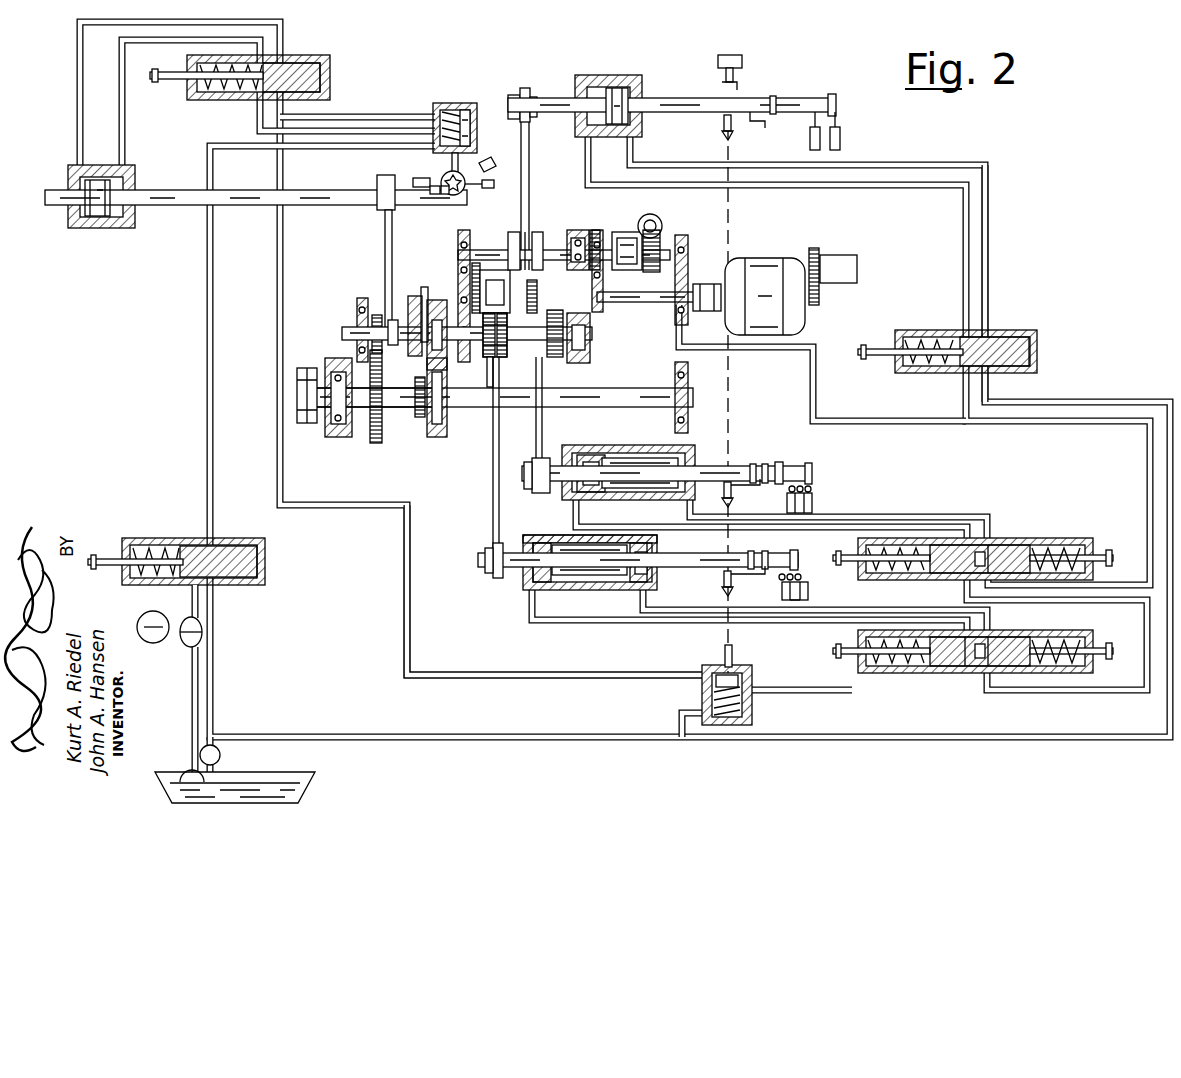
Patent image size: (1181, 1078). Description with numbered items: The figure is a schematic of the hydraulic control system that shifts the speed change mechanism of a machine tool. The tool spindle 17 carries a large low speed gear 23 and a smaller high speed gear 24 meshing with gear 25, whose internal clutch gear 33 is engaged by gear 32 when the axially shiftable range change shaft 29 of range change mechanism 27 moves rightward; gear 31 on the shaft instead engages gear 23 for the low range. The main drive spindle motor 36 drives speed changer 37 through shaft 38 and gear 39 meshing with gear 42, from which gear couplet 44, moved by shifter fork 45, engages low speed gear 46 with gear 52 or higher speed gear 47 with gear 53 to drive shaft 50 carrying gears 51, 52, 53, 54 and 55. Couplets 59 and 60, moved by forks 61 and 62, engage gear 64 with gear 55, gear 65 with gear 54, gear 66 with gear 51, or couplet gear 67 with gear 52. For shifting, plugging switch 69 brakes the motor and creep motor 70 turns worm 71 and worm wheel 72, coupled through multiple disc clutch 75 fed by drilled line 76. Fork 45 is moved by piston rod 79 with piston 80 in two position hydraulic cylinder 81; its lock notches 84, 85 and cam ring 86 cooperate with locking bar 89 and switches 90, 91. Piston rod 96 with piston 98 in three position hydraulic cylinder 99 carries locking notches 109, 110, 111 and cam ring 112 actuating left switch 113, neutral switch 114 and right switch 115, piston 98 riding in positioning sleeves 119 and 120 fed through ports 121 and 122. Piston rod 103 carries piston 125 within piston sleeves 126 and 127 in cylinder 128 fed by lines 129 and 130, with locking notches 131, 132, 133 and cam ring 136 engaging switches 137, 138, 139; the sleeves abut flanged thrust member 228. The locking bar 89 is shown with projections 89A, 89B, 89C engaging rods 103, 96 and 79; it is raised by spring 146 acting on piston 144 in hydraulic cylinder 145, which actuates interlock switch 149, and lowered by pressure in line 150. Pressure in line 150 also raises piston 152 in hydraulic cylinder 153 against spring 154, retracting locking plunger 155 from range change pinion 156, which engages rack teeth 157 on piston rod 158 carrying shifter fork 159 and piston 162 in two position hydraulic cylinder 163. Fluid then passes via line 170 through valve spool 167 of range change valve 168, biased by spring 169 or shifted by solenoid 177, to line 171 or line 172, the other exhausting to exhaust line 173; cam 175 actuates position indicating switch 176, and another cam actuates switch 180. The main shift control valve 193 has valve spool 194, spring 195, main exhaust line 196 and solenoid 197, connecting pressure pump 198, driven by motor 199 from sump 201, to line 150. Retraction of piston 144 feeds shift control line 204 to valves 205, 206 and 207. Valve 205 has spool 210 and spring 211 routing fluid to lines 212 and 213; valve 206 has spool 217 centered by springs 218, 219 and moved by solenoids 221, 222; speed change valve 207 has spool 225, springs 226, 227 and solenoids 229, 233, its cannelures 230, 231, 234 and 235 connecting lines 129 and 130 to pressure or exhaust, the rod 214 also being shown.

The tool spindle 17 is at (300, 424).
The low speed gear 23 is at (372, 445).
The high speed gear 24 is at (386, 420).
The high speed spindle driving gear 25 is at (428, 290).
The range change mechanism 27 is at (372, 278).
The range change shaft 29 is at (343, 335).
The gear 31 is at (372, 291).
The gear 32 is at (395, 318).
The internal clutch gear 33 is at (416, 350).
The main drive spindle motor 36 is at (780, 303).
The speed changer 37 is at (495, 186).
The shaft 38 is at (641, 303).
The gear 39 is at (598, 312).
The gear 42 is at (590, 233).
The gear couplet 44 is at (551, 222).
The shifter fork 45 is at (531, 151).
The low speed gear 46 is at (513, 232).
The higher speed gear 47 is at (538, 235).
The shaft 50 is at (458, 254).
The gear 51 is at (472, 258).
The gear 52 is at (478, 290).
The gear 53 is at (495, 291).
The gear 54 is at (500, 340).
The gear 55 is at (540, 288).
The low speed gear couplet 59 is at (576, 406).
The high speed gear couplet 60 is at (481, 403).
The shifter fork 61 is at (537, 452).
The shifter fork 62 is at (492, 468).
The gear 64 is at (578, 363).
The gear 65 is at (554, 358).
The gear 66 is at (482, 348).
The couplet gear 67 is at (501, 358).
The plugging switch 69 is at (858, 266).
The creep motor 70 is at (628, 232).
The worm 71 is at (662, 220).
The worm wheel 72 is at (661, 238).
The multiple disc clutch 75 is at (600, 223).
The drilled line 76 is at (689, 252).
The piston rod 79 is at (672, 98).
The piston 80 is at (620, 88).
The two position hydraulic cylinder 81 is at (590, 96).
The lock notch 84 is at (750, 100).
The lock notch 85 is at (776, 102).
The cam ring 86 is at (837, 103).
The locking bar 89 is at (735, 652).
The projection 89A is at (744, 592).
The projection 89B is at (745, 499).
The projection 89C is at (734, 134).
The switch 90 is at (841, 140).
The switch 91 is at (811, 147).
The piston rod 96 is at (712, 466).
The piston 98 is at (660, 452).
The three position hydraulic cylinder 99 is at (552, 493).
The piston rod 103 is at (676, 556).
The locking notch 109 is at (752, 464).
The locking notch 110 is at (766, 462).
The locking notch 111 is at (779, 463).
The cam ring 112 is at (809, 466).
The left switch 113 is at (754, 486).
The neutral switch 114 is at (812, 492).
The right switch 115 is at (813, 506).
The positioning sleeve 119 is at (595, 455).
The positioning sleeve 120 is at (680, 456).
The port 121 is at (922, 527).
The port 122 is at (885, 517).
The piston 125 is at (592, 574).
The piston sleeve 126 is at (556, 588).
The piston sleeve 127 is at (655, 578).
The three position hydraulic cylinder 128 is at (498, 579).
The line 129 is at (566, 622).
The line 130 is at (645, 600).
The locking notch 131 is at (750, 556).
The locking notch 132 is at (768, 560).
The locking notch 133 is at (795, 557).
The cam ring 136 is at (803, 578).
The switch 137 is at (768, 572).
The switch 138 is at (798, 604).
The switch 139 is at (808, 596).
The piston 144 is at (706, 688).
The hydraulic cylinder 145 is at (752, 718).
The spring 146 is at (745, 700).
The interlock switch 149 is at (742, 60).
The pressure supply line 150 is at (206, 264).
The piston 152 is at (477, 140).
The hydraulic cylinder 153 is at (433, 112).
The spring 154 is at (453, 118).
The locking plunger 155 is at (452, 160).
The range change pinion 156 is at (470, 192).
The rack teeth 157 is at (446, 196).
The piston rod 158 is at (300, 203).
The shifter fork 159 is at (389, 252).
The piston 162 is at (92, 225).
The two position hydraulic cylinder 163 is at (118, 222).
The valve spool 167 is at (320, 80).
The range change valve 168 is at (295, 46).
The spring 169 is at (219, 95).
The line 170 is at (334, 135).
The line 171 is at (122, 124).
The line 172 is at (76, 147).
The exhaust line 173 is at (276, 166).
The cam 175 is at (433, 195).
The position indicating switch 176 is at (413, 178).
The solenoid 177 is at (162, 82).
The position indicating switch 180 is at (499, 157).
The shift control valve 193 is at (203, 529).
The valve spool 194 is at (266, 545).
The spring 195 is at (146, 584).
The main exhaust line 196 is at (213, 704).
The solenoid 197 is at (112, 557).
The pressure pump 198 is at (186, 649).
The motor 199 is at (155, 644).
The sump 201 is at (262, 772).
The shift control line 204 is at (814, 398).
The shift control valve 205 is at (995, 328).
The shift control valve 206 is at (997, 528).
The speed change valve 207 is at (1006, 686).
The valve spool 210 is at (1030, 352).
The spring 211 is at (934, 373).
The line 212 is at (906, 187).
The line 213 is at (890, 168).
The rod 214 is at (870, 356).
The valve spool 217 is at (1006, 542).
The compression spring 218 is at (918, 582).
The compression spring 219 is at (1040, 542).
The solenoid 221 is at (1109, 554).
The solenoid 222 is at (872, 582).
The valve spool 225 is at (1012, 676).
The spring 226 is at (862, 631).
The spring 227 is at (1060, 676).
The flanged thrust member 228 is at (595, 540).
The solenoid 229 is at (858, 656).
The cannelure 230 is at (1030, 640).
The cannelure 231 is at (995, 637).
The solenoid 233 is at (1098, 659).
The cannelure 234 is at (935, 676).
The cannelure 235 is at (965, 680).